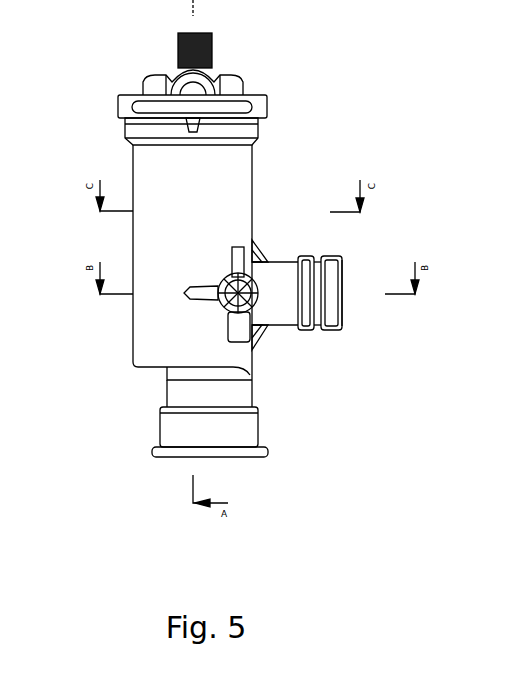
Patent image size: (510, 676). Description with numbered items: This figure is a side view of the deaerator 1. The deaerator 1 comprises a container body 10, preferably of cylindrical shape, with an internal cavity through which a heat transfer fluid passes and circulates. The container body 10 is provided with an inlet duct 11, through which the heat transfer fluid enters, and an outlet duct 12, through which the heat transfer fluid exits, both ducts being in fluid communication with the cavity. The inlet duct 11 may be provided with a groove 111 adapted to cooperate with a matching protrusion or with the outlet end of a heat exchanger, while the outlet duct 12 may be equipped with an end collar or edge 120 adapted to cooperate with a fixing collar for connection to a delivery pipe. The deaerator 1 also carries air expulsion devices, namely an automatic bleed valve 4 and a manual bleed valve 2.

The deaerator 1 is at (310, 82).
The automatic bleed valve 4 is at (176, 46).
The container body 10 is at (243, 180).
The manual bleed valve 2 is at (235, 247).
The inlet duct 11 is at (338, 326).
The groove 111 is at (317, 352).
The outlet duct 12 is at (175, 423).
The end collar or edge 120 is at (157, 452).